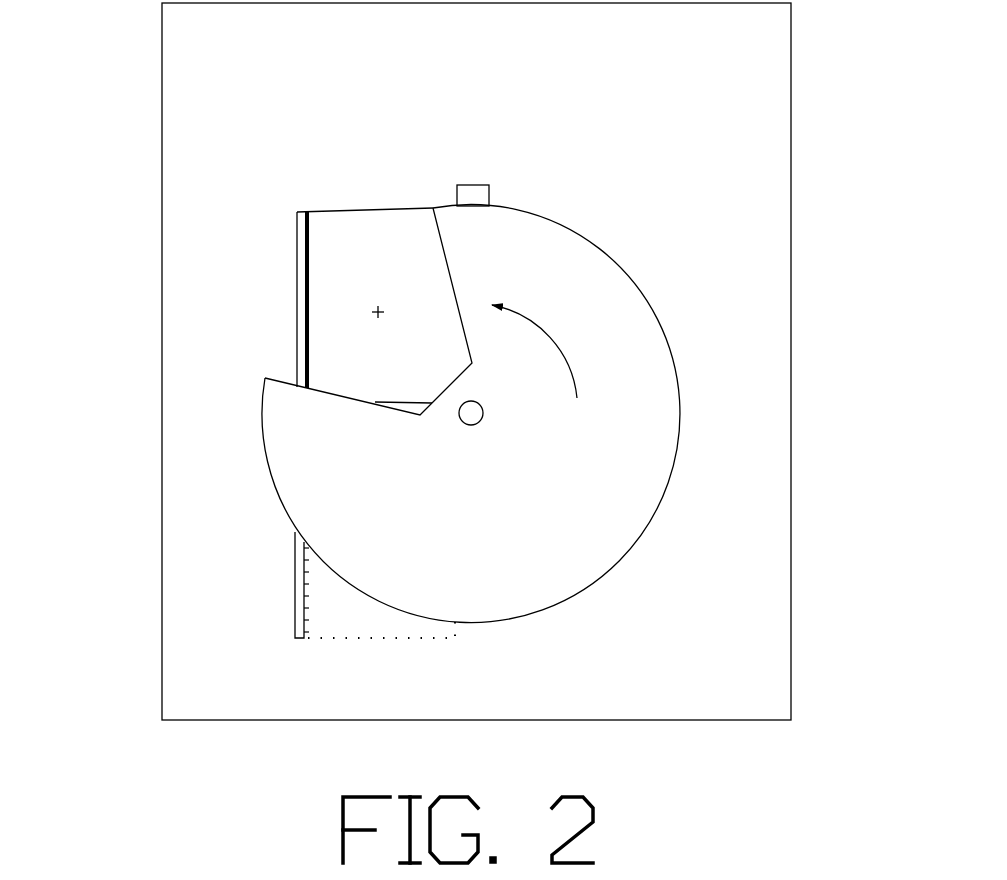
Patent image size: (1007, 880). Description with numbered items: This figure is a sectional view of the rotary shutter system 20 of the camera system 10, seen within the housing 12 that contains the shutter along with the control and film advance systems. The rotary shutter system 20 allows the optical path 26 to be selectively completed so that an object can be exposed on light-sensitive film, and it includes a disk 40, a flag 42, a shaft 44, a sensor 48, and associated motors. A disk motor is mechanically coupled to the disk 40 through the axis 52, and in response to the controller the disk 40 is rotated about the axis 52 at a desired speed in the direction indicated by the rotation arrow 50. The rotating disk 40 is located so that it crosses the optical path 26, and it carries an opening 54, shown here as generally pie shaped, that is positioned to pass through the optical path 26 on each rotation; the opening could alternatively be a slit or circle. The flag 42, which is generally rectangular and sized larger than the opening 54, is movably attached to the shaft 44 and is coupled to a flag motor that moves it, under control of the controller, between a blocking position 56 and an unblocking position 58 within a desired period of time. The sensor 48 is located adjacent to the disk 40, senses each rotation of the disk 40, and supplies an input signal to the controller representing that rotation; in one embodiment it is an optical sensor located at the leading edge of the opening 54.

The camera system 10 is at (939, 141).
The housing 12 is at (526, 361).
The rotary shutter system 20 is at (223, 56).
The optical path 26 is at (288, 334).
The disk 40 is at (486, 401).
The flag 42 is at (376, 397).
The shaft 44 is at (257, 281).
The sensor 48 is at (512, 151).
The rotation arrow 50 is at (606, 329).
The axis 52 is at (437, 440).
The opening 54 is at (400, 326).
The blocking position 56 is at (253, 303).
The unblocking position 58 is at (255, 538).